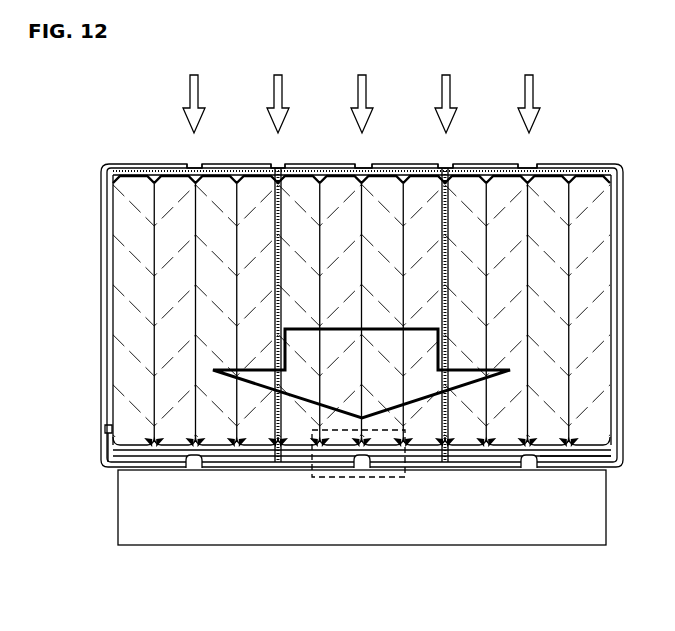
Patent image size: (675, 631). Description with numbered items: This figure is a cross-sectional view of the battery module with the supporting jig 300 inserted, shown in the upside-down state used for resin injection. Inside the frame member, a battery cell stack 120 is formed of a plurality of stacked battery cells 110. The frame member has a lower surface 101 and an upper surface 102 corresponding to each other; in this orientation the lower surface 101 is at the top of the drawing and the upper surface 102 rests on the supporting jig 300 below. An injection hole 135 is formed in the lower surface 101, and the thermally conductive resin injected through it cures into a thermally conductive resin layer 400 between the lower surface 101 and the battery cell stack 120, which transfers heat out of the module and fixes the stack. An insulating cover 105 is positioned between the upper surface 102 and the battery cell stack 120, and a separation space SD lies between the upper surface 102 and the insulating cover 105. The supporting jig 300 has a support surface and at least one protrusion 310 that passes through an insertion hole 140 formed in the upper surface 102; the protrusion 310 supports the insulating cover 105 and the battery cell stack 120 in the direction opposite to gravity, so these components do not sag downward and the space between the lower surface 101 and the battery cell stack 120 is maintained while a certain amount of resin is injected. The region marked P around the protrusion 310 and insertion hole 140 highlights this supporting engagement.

The lower surface 101 is at (480, 166).
The upper surface 102 is at (113, 465).
The insulating cover 105 is at (450, 457).
The battery cells 110 is at (549, 213).
The battery cell stack 120 is at (183, 200).
The injection hole 135 is at (363, 165).
The insertion hole 140 is at (362, 472).
The supporting jig 300 is at (211, 533).
The protrusion 310 is at (531, 468).
The thermally conductive resin layer 400 is at (322, 176).
The discharge path P is at (388, 478).
The separation space SD is at (566, 457).